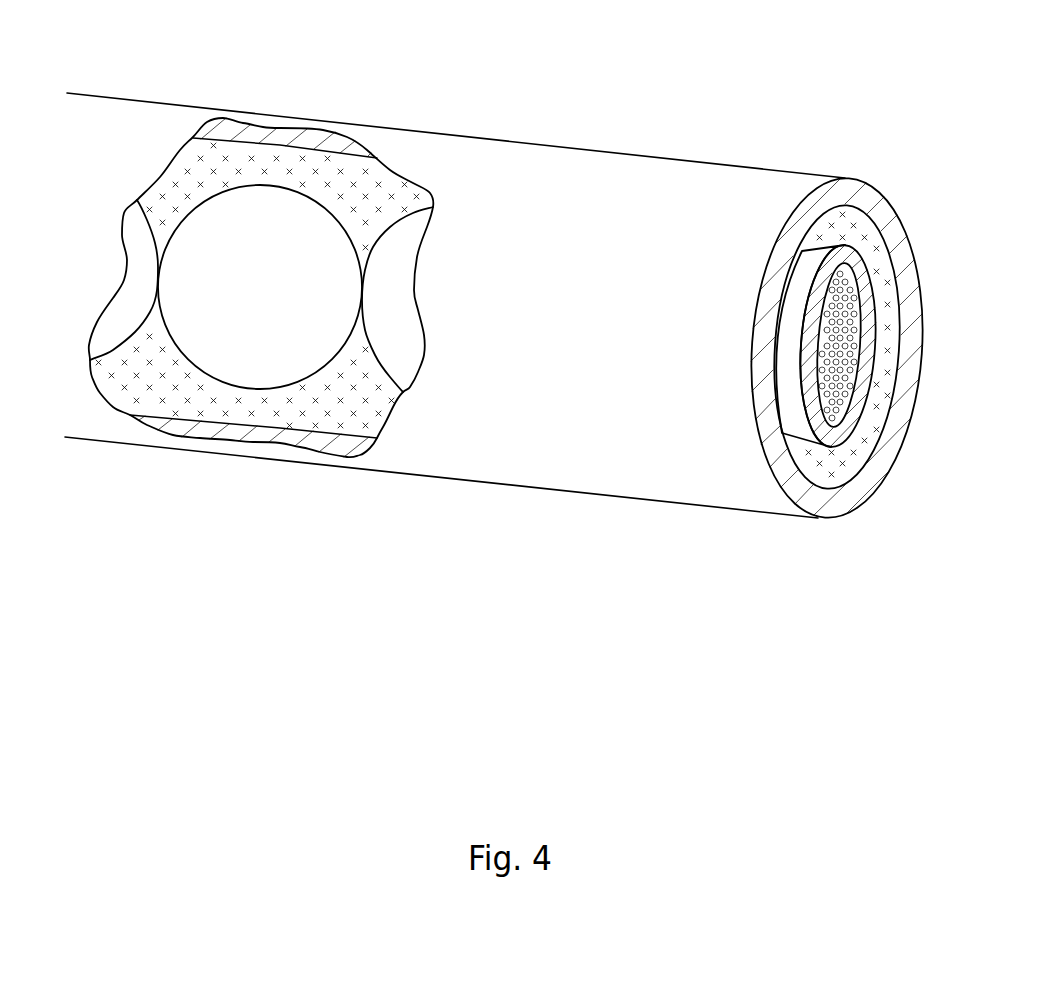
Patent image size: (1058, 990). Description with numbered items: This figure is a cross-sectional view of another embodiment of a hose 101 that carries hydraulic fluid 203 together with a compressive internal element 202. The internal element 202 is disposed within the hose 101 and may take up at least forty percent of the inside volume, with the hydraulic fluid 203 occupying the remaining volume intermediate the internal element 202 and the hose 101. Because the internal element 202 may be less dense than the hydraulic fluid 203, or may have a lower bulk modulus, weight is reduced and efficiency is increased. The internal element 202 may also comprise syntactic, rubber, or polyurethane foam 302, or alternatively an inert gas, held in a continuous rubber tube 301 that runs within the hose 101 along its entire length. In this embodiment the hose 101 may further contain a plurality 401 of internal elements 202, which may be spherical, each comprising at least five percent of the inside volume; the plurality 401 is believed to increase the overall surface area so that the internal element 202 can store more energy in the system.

The hose 101 is at (504, 165).
The internal element 202 is at (262, 227).
The hydraulic fluid 203 is at (835, 460).
The rubber tube 301 is at (840, 256).
The foam 302 is at (840, 315).
The plurality of internal elements 401 is at (338, 398).